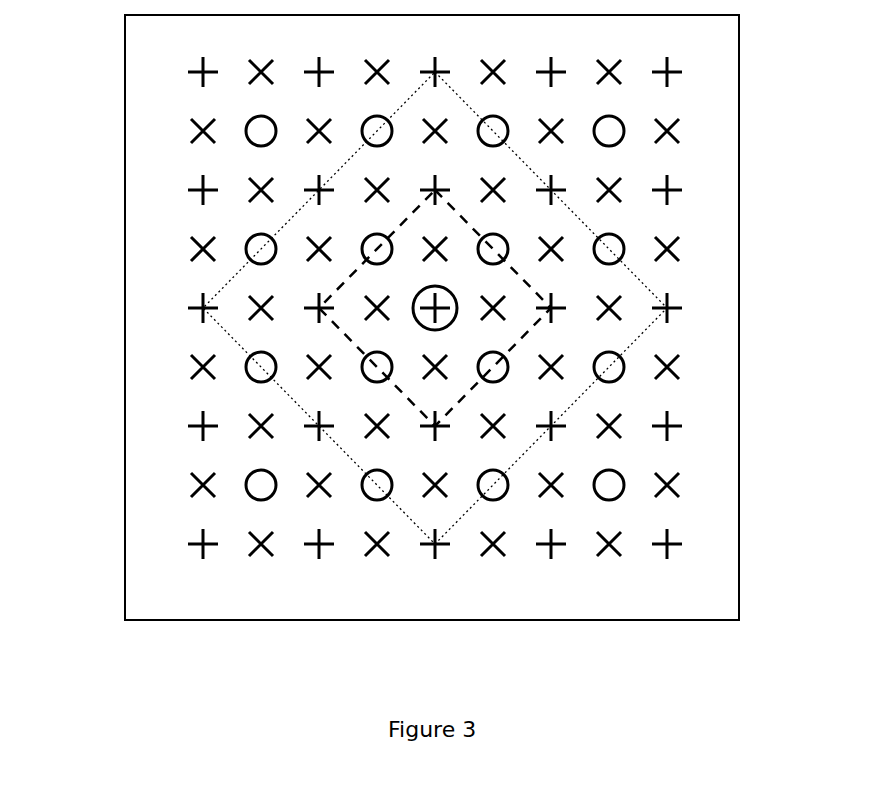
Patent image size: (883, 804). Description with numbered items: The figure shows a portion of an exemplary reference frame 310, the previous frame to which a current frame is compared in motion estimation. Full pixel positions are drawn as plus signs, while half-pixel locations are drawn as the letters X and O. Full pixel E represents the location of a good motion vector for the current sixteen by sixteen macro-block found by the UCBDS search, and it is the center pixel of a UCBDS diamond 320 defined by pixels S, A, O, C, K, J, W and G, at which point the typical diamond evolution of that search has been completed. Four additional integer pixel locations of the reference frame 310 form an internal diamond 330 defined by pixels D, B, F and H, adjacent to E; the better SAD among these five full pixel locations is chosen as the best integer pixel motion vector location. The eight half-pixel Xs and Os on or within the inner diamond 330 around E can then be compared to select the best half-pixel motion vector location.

The reference frame 310 is at (125, 118).
The UCBDS diamond 320 is at (590, 228).
The internal diamond 330 is at (467, 395).